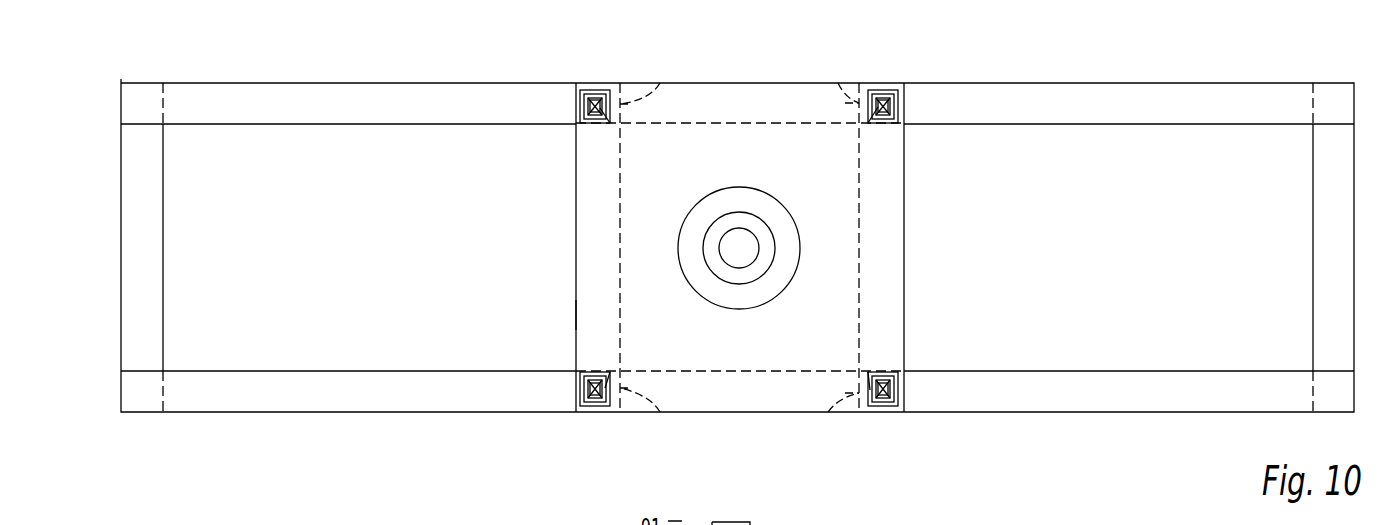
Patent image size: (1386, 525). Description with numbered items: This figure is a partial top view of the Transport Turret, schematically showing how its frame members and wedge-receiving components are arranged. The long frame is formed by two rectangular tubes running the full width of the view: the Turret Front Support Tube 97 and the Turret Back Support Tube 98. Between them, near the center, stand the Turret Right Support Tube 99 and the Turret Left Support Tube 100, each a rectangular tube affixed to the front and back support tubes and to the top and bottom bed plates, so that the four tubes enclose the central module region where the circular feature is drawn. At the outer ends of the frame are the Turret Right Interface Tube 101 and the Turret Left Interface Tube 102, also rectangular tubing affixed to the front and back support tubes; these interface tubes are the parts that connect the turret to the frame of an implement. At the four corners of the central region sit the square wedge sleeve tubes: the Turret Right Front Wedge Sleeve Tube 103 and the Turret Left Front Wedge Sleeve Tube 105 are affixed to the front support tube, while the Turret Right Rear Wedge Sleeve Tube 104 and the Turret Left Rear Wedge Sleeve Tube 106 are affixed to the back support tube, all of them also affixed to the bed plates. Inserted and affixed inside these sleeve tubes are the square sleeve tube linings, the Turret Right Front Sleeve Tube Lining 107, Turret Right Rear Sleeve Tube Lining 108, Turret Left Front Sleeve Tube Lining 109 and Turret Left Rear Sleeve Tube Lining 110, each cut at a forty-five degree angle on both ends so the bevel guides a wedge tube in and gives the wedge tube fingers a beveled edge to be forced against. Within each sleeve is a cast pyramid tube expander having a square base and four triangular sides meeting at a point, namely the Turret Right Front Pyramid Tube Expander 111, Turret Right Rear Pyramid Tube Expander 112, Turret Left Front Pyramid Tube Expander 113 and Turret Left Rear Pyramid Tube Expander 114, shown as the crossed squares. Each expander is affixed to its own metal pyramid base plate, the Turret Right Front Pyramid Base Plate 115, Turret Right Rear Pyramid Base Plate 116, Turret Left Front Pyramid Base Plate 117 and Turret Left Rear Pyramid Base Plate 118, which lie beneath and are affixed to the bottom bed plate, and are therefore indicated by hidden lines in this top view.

The turret front support tube 97 is at (324, 376).
The turret back support tube 98 is at (1180, 116).
The turret right support tube 99 is at (580, 312).
The turret left support tube 100 is at (896, 228).
The turret right interface tube 101 is at (163, 193).
The turret left interface tube 102 is at (1313, 253).
The turret right front wedge sleeve tube 103 is at (585, 388).
The turret right rear wedge sleeve tube 104 is at (585, 104).
The turret left front wedge sleeve tube 105 is at (870, 390).
The turret left rear wedge sleeve tube 106 is at (874, 107).
The turret right front sleeve tube lining 107 is at (596, 395).
The turret right rear sleeve tube lining 108 is at (596, 103).
The turret left front sleeve tube lining 109 is at (883, 398).
The turret left rear sleeve tube lining 110 is at (881, 103).
The turret right front pyramid tube expander 111 is at (605, 388).
The turret right rear pyramid tube expander 112 is at (600, 108).
The turret left front pyramid tube expander 113 is at (883, 386).
The turret left rear pyramid tube expander 114 is at (882, 108).
The turret right front pyramid base plate 115 is at (660, 412).
The turret right rear pyramid base plate 116 is at (660, 83).
The turret left front pyramid base plate 117 is at (828, 412).
The turret left rear pyramid base plate 118 is at (838, 83).